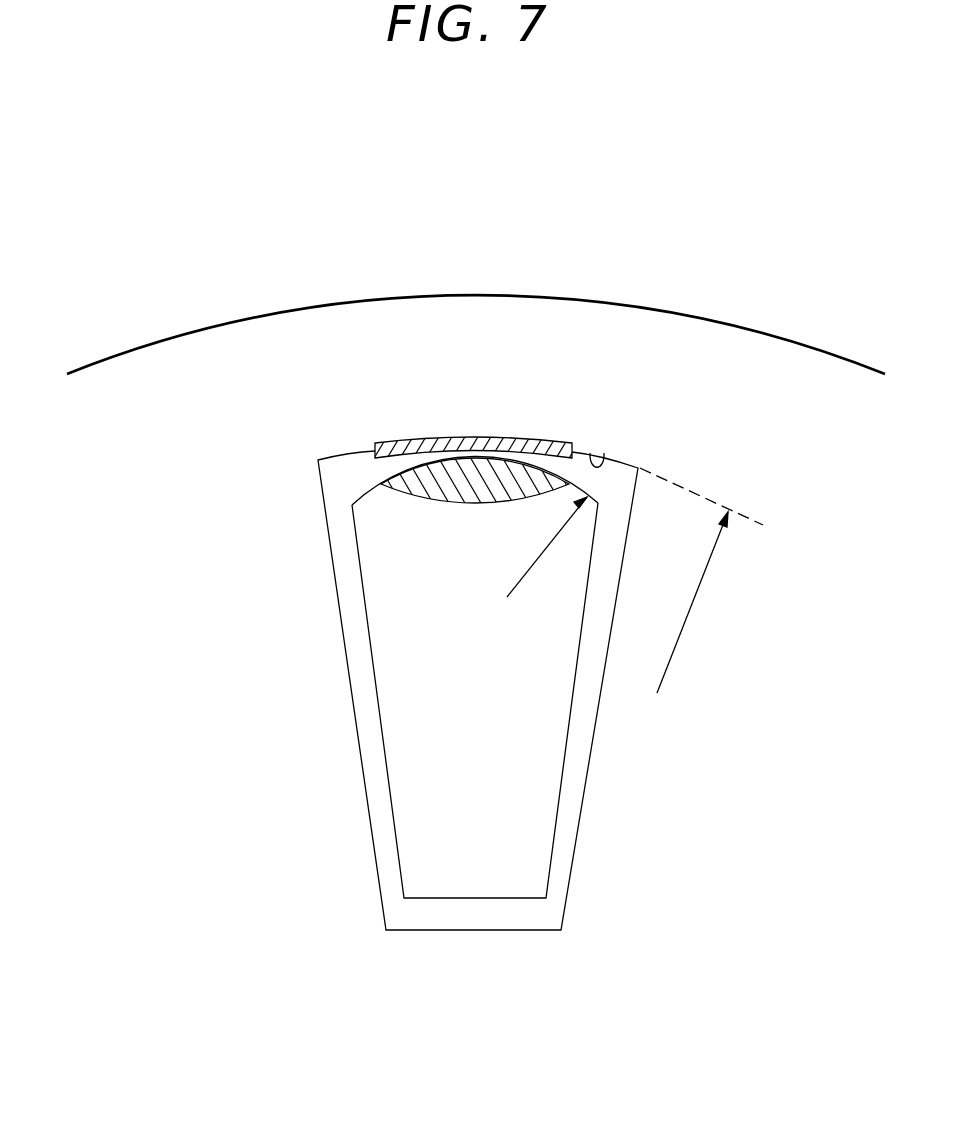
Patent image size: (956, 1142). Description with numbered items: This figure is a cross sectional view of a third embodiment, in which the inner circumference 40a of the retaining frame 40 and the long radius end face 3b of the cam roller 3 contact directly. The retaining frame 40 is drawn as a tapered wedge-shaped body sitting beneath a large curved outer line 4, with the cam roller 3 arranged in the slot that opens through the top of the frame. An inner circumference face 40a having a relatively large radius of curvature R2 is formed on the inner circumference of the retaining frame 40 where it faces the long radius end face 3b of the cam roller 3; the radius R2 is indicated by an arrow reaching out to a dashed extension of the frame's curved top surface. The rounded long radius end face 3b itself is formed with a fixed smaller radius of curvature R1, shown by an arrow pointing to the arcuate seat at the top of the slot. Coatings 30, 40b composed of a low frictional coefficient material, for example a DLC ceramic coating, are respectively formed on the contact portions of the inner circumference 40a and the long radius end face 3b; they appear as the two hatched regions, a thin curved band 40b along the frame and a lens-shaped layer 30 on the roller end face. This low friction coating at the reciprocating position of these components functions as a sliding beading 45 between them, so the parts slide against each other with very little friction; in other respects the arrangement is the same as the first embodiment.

The rotor outer periphery 4 is at (253, 317).
The retaining frame 40 is at (373, 838).
The inner circumference face 40a is at (607, 453).
The coating 40b is at (443, 440).
The sliding beading 45 is at (493, 455).
The cam roller 3 is at (516, 873).
The long radius end face 3b is at (362, 493).
The coating 30 is at (470, 470).
The radius of curvature R1 is at (546, 562).
The radius of curvature R2 is at (701, 580).